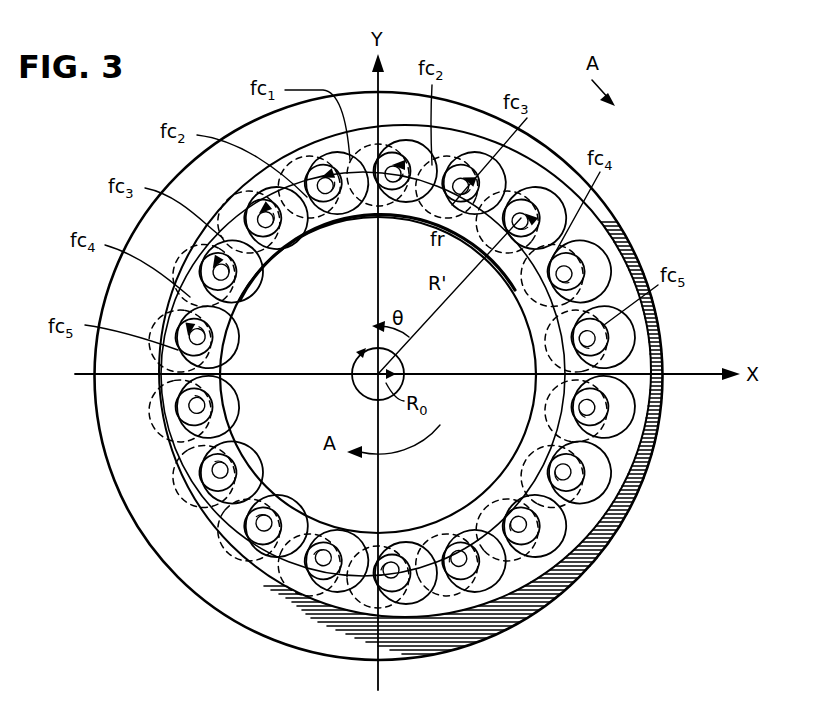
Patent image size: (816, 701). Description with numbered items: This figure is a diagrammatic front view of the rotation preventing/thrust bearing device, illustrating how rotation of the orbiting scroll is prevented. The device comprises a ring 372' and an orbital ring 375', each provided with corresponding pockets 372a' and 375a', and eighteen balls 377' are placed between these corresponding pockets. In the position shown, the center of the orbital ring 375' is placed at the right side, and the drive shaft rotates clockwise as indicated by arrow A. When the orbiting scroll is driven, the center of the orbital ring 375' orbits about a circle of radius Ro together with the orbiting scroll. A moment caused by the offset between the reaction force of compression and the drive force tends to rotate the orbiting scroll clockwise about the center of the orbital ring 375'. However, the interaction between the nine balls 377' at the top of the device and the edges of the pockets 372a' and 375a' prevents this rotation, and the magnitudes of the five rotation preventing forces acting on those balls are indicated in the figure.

The ring 372' is at (380, 374).
The pockets 372a' is at (363, 374).
The orbital ring 375' is at (384, 376).
The pockets 375a' is at (450, 372).
The balls 377' is at (495, 438).